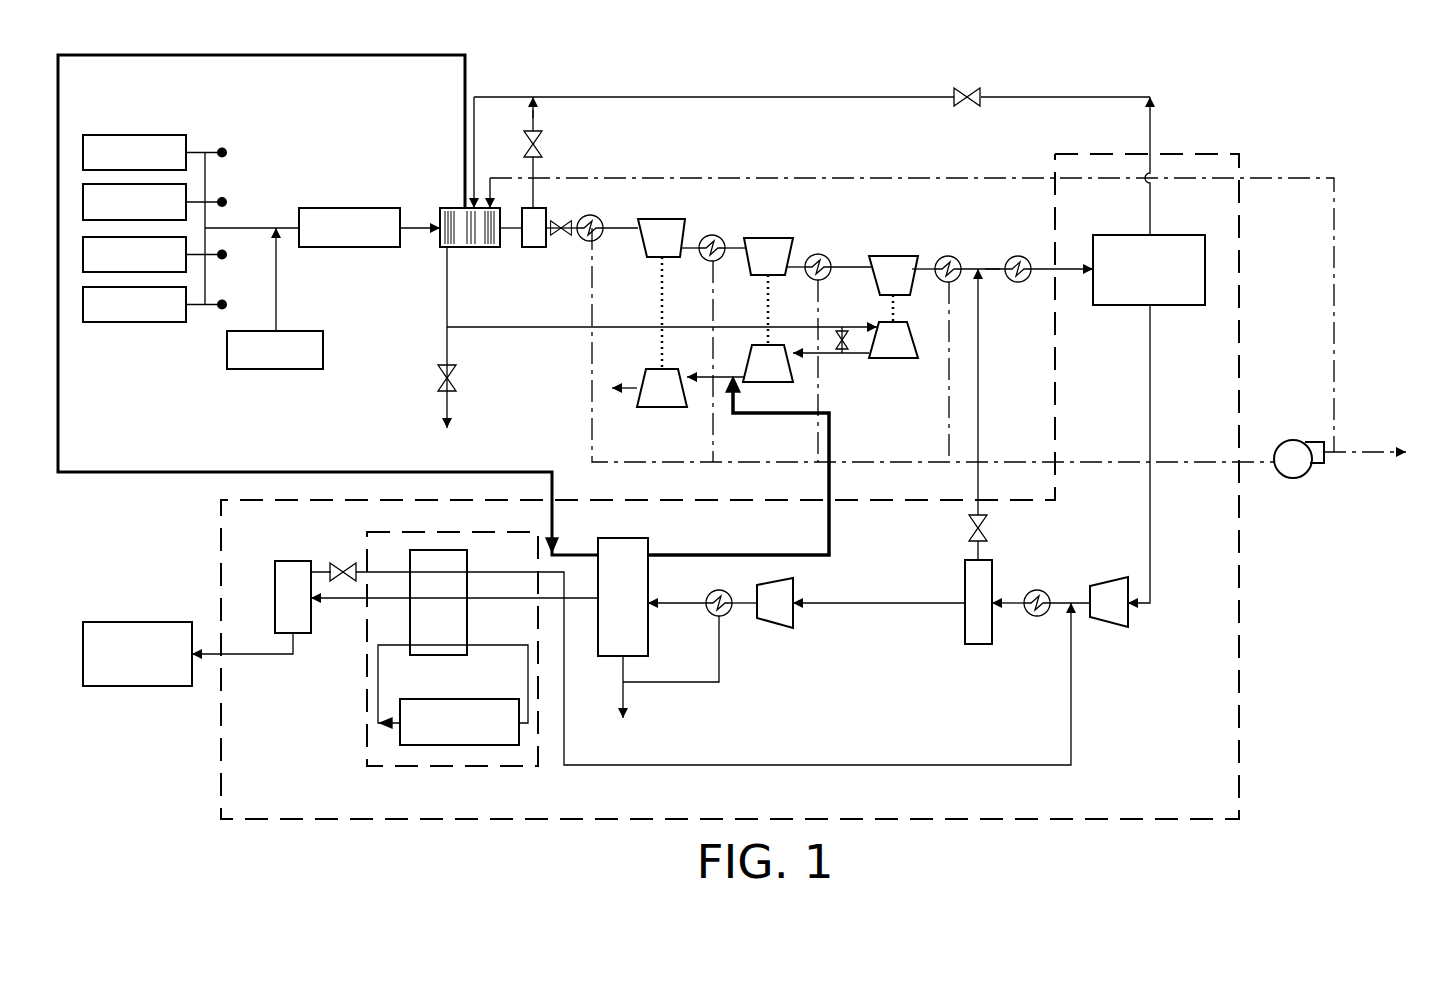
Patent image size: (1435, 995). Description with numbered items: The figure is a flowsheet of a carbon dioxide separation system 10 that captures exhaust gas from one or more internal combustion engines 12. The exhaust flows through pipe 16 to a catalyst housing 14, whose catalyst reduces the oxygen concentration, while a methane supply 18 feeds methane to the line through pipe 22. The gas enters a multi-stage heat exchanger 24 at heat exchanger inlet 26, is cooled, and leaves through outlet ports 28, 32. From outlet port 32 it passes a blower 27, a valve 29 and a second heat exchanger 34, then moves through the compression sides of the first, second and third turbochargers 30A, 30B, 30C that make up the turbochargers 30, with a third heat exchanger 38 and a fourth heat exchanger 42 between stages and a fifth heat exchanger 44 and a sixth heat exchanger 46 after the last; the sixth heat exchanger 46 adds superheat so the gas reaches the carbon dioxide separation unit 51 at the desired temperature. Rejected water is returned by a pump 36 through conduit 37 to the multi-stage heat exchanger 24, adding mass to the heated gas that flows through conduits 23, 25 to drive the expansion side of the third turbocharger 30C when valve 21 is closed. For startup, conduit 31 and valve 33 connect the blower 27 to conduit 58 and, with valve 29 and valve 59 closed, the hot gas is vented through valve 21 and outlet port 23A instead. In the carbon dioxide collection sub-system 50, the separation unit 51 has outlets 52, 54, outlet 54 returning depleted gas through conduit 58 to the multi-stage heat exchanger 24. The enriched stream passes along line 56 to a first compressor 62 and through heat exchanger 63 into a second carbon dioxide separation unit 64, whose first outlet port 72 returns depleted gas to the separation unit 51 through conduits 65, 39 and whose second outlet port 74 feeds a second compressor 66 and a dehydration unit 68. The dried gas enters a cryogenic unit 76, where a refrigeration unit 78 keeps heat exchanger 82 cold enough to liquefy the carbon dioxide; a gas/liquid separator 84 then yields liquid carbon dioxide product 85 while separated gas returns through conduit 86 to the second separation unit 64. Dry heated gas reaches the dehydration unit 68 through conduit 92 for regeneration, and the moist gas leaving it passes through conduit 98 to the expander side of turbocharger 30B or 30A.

The system 10 is at (1392, 163).
The internal combustion engines 12 is at (118, 135).
The catalyst housing 14 is at (352, 208).
The pipe 16 is at (243, 228).
The methane supply 18 is at (275, 369).
The valve 21 is at (455, 376).
The pipe 22 is at (276, 258).
The conduit 23 is at (447, 293).
The outlet port 23A is at (447, 395).
The multi-stage heat exchanger 24 is at (448, 207).
The conduit 25 is at (560, 328).
The heat exchanger inlet 26 is at (418, 220).
The blower 27 is at (535, 247).
The outlet port 28 is at (437, 247).
The valve 29 is at (561, 238).
The turbochargers 30 is at (770, 196).
The first turbocharger 30A is at (672, 219).
The second turbocharger 30B is at (782, 238).
The third turbocharger 30C is at (893, 256).
The conduit 31 is at (535, 124).
The outlet port 32 is at (503, 240).
The valve 33 is at (545, 150).
The second heat exchanger 34 is at (595, 215).
The pump 36 is at (1300, 478).
The conduit 37 is at (1295, 178).
The third heat exchanger 38 is at (720, 236).
The conduit 39 is at (993, 275).
The fourth heat exchanger 42 is at (826, 255).
The fifth heat exchanger 44 is at (950, 256).
The sixth heat exchanger 46 is at (1022, 256).
The carbon dioxide collection sub-system 50 is at (1239, 730).
The carbon dioxide separation unit 51 is at (1205, 266).
The outlet 52 is at (1150, 306).
The outlet 54 is at (1150, 233).
The gas line 56 is at (1150, 530).
The conduit 58 is at (1105, 97).
The valve 59 is at (968, 88).
The first compressor 62 is at (1125, 622).
The heat exchanger 63 is at (1042, 590).
The second carbon dioxide separation unit 64 is at (965, 632).
The conduit 65 is at (978, 392).
The second compressor 66 is at (783, 627).
The dehydration unit 68 is at (648, 630).
The first outlet port 72 is at (984, 542).
The second outlet port 74 is at (965, 572).
The cryogenic unit 76 is at (367, 742).
The refrigeration unit 78 is at (428, 699).
The heat exchanger 82 is at (438, 550).
The gas/liquid separator 84 is at (290, 561).
The liquid carbon dioxide product 85 is at (137, 654).
The conduit 86 is at (1071, 700).
The conduit 92 is at (313, 58).
The conduit 98 is at (752, 553).